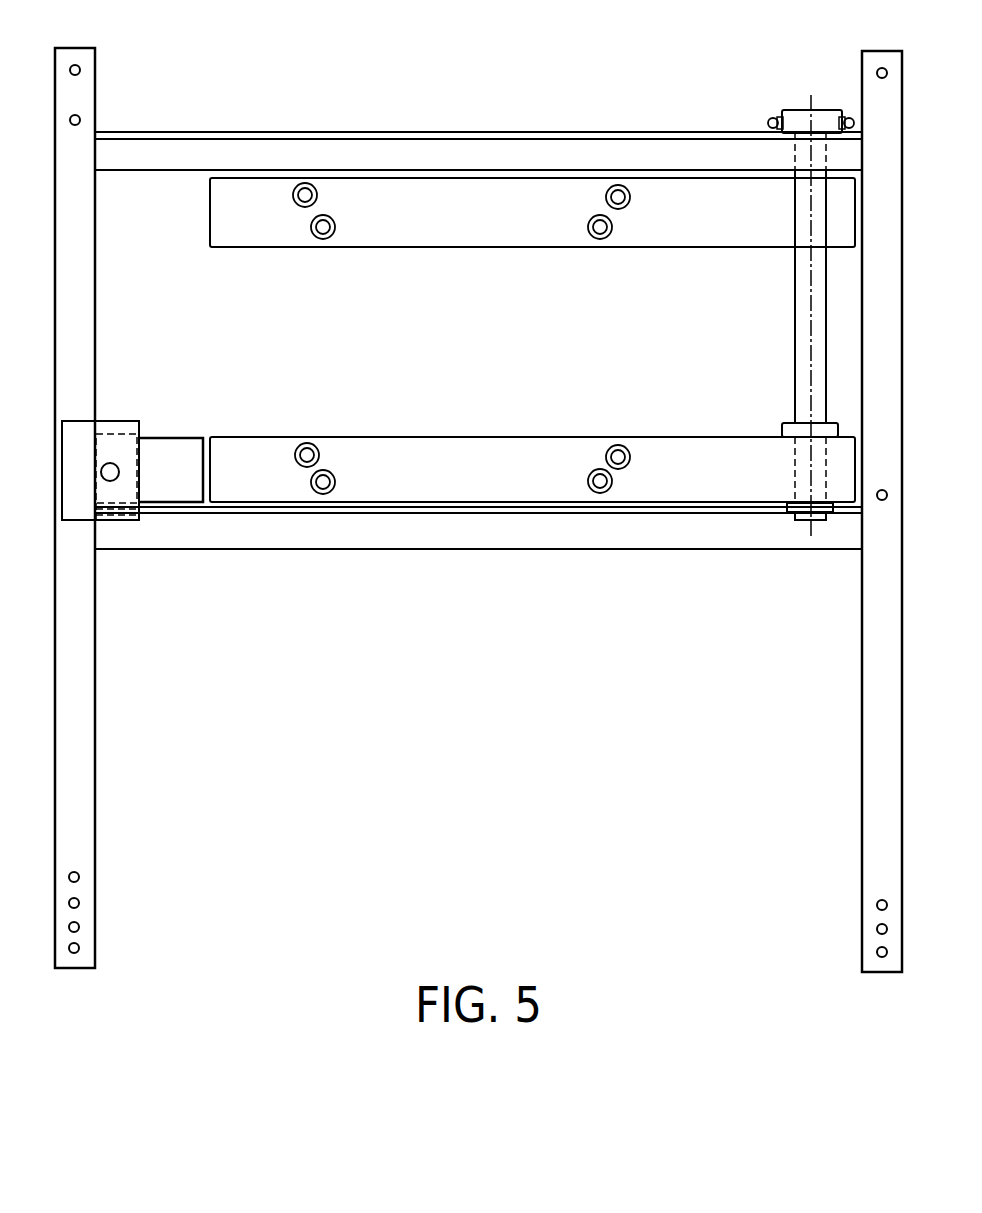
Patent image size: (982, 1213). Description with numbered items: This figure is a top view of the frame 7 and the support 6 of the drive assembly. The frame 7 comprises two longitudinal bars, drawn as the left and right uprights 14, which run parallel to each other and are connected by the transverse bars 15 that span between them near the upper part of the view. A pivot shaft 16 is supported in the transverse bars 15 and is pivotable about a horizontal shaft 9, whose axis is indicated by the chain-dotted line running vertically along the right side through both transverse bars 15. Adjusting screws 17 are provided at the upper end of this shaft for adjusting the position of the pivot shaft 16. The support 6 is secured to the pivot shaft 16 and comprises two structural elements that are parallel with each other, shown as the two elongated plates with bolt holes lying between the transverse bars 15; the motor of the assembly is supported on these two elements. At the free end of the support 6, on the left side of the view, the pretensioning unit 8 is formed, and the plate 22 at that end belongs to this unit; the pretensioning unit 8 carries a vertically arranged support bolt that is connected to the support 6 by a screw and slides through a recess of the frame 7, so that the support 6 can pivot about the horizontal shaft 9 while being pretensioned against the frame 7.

The support 6 is at (441, 215).
The frame 7 is at (850, 654).
The pretensioning unit 8 is at (126, 542).
The horizontal shaft 9 is at (805, 339).
The upright post 14 is at (85, 755).
The transverse bars 15 is at (260, 167).
The pivot shaft 16 is at (803, 368).
The adjusting screws 17 is at (762, 92).
The bearing plate 22 is at (79, 447).